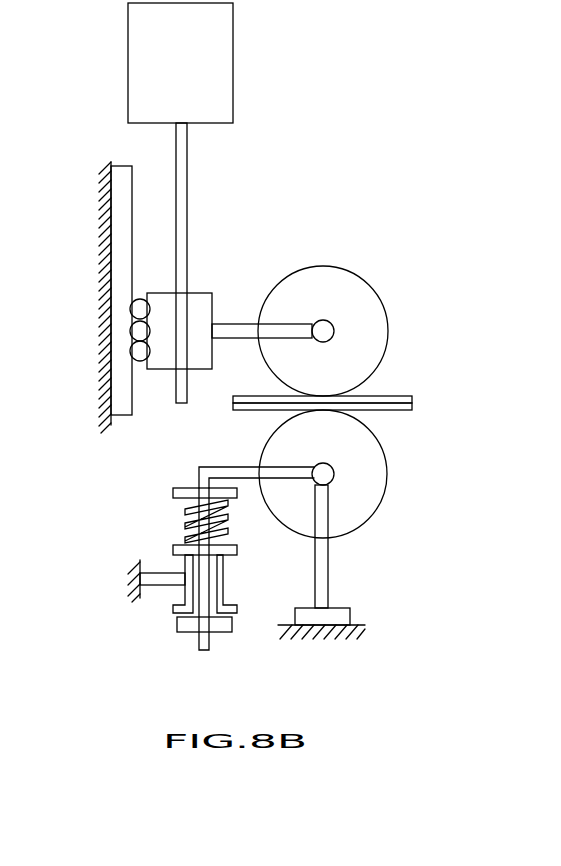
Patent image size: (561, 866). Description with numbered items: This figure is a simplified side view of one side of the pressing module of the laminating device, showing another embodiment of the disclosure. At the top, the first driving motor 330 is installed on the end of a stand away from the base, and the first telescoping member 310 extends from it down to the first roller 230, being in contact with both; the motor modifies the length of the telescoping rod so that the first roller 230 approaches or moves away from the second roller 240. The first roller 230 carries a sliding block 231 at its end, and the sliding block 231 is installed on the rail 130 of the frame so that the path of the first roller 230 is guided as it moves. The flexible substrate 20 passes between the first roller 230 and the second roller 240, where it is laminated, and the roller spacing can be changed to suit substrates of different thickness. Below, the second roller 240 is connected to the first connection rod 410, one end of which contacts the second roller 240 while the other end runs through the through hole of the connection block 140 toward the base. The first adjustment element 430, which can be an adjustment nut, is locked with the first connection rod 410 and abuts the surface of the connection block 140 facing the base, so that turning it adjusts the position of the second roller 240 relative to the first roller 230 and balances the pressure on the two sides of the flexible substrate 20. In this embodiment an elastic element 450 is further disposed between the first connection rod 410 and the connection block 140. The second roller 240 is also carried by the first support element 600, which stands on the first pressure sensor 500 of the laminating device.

The first driving motor 330 is at (149, 67).
The first telescoping member 310 is at (181, 147).
The rail 130 is at (117, 218).
The sliding block 231 is at (148, 331).
The first roller 230 is at (370, 331).
The flexible substrate 20 is at (412, 400).
The second roller 240 is at (370, 477).
The first connection rod 410 is at (198, 483).
The elastic element 450 is at (186, 526).
The connection block 140 is at (173, 607).
The first adjustment element 430 is at (177, 625).
The first support element 600 is at (329, 578).
The first pressure sensor 500 is at (322, 630).